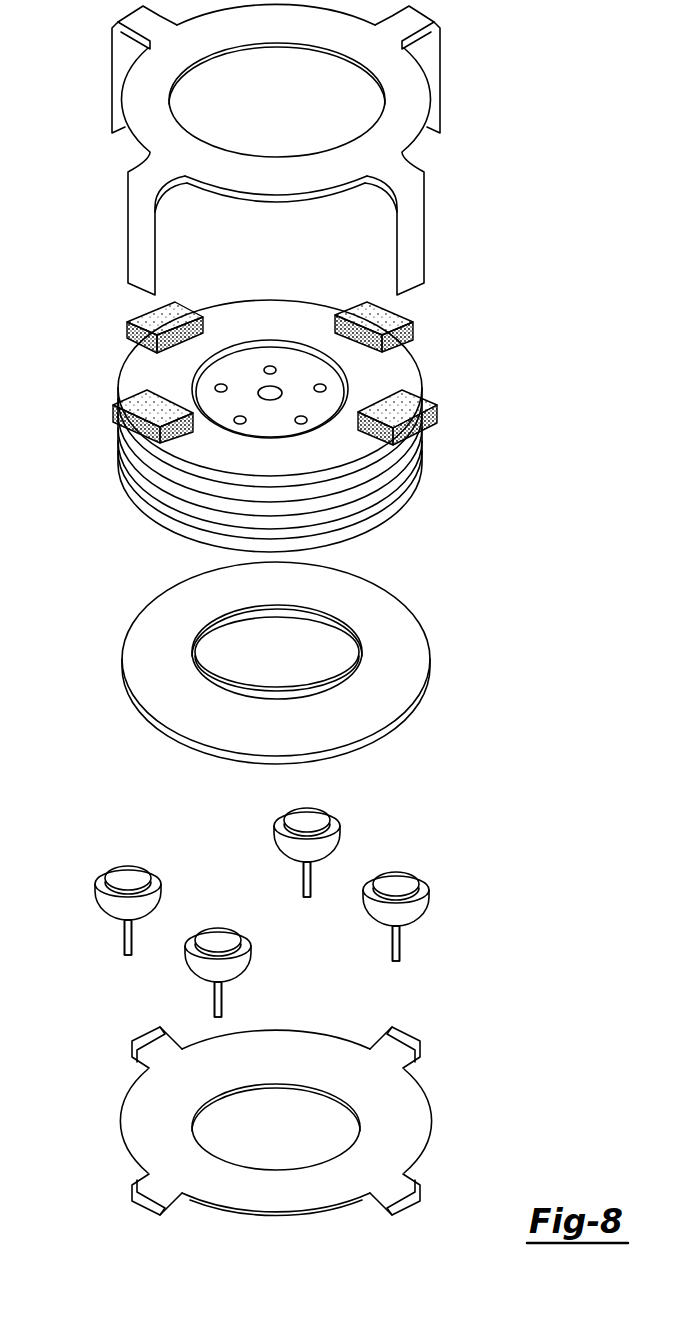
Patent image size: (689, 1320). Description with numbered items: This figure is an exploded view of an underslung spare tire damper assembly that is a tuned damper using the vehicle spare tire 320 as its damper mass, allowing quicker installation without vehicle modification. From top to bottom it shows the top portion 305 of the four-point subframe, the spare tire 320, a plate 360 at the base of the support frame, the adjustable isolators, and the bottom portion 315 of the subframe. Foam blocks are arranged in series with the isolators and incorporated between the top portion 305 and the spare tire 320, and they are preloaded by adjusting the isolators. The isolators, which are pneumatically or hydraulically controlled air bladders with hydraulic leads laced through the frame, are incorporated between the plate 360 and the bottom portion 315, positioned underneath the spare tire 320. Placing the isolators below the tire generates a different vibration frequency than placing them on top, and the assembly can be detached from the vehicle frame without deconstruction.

The top portion 305 is at (405, 118).
The bottom portion 315 is at (405, 1115).
The spare tire 320 is at (407, 453).
The plate 360 is at (403, 650).